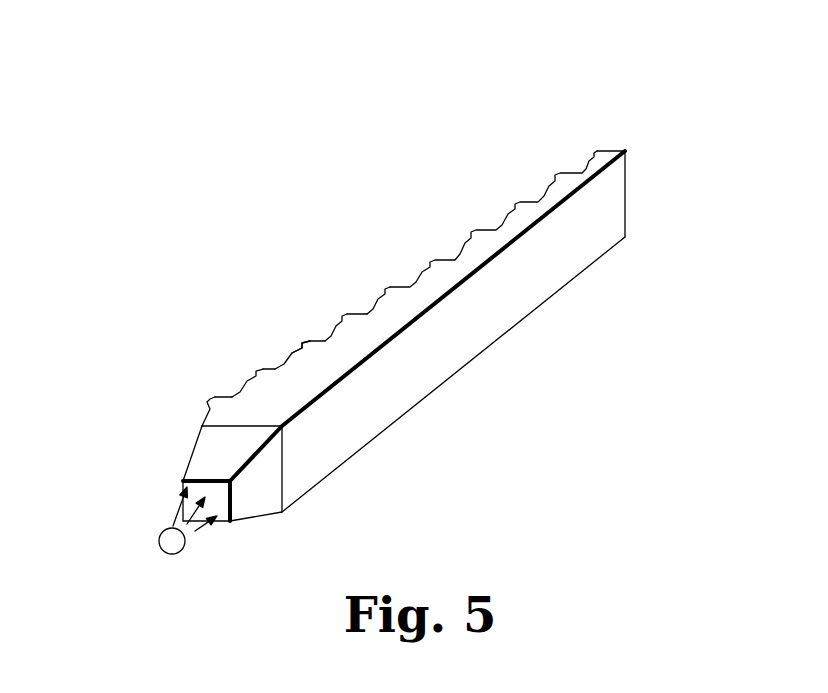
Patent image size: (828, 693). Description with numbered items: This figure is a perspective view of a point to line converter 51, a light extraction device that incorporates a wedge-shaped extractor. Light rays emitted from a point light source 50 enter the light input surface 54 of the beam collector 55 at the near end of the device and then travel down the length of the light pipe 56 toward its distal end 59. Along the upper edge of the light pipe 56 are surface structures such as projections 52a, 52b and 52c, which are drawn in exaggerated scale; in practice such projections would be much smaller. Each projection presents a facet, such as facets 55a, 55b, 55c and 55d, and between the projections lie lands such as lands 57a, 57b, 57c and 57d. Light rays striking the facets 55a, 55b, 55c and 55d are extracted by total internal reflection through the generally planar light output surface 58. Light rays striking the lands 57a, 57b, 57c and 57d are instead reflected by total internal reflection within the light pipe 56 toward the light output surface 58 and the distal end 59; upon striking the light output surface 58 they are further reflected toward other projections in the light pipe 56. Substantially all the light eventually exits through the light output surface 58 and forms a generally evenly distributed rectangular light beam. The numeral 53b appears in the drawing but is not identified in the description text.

The point light source 50 is at (151, 531).
The point to line converter 51 is at (200, 237).
The projection 52a is at (201, 390).
The projection 52b is at (328, 300).
The projection 52c is at (394, 267).
The tooth 53b is at (300, 334).
The light input surface 54 is at (223, 513).
The beam collector 55 is at (245, 489).
The facet 55a is at (224, 389).
The facet 55b is at (267, 361).
The facet 55c is at (300, 333).
The facet 55d is at (347, 306).
The light pipe 56 is at (484, 236).
The land 57a is at (237, 383).
The land 57b is at (287, 356).
The land 57c is at (317, 333).
The land 57d is at (359, 306).
The light output surface 58 is at (522, 276).
The distal end 59 is at (600, 139).